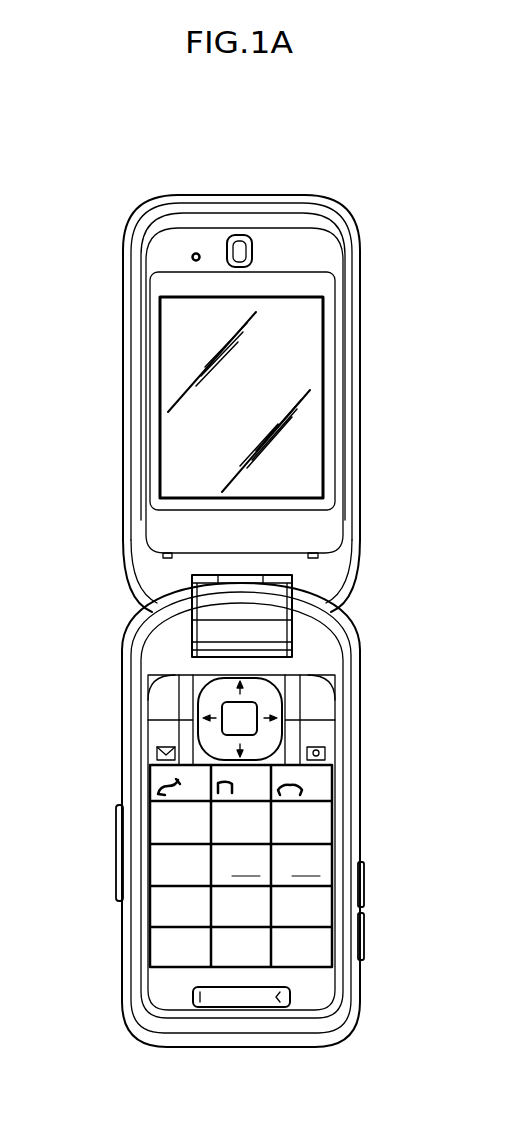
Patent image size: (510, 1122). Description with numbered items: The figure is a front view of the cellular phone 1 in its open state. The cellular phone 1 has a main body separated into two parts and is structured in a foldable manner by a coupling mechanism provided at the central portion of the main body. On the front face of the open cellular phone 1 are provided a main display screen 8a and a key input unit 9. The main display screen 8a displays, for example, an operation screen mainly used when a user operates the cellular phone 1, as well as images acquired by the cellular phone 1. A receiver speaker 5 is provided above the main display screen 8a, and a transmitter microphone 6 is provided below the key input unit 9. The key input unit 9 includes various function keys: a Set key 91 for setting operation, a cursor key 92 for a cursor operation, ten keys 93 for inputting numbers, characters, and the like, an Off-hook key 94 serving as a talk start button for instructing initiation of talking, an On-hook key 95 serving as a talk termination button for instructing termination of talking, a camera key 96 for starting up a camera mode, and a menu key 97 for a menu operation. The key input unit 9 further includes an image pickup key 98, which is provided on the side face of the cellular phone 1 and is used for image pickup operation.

The cellular phone 1 is at (356, 182).
The receiver speaker 5 is at (243, 237).
The main display screen 8a is at (313, 370).
The transmitter microphone 6 is at (281, 998).
The key input unit 9 is at (50, 613).
The Set key 91 is at (237, 715).
The cursor key 92 is at (257, 695).
The ten keys 93 is at (140, 887).
The Off-hook key 94 is at (160, 769).
The On-hook key 95 is at (322, 780).
The camera key 96 is at (154, 697).
The menu key 97 is at (338, 688).
The image pickup key 98 is at (366, 938).